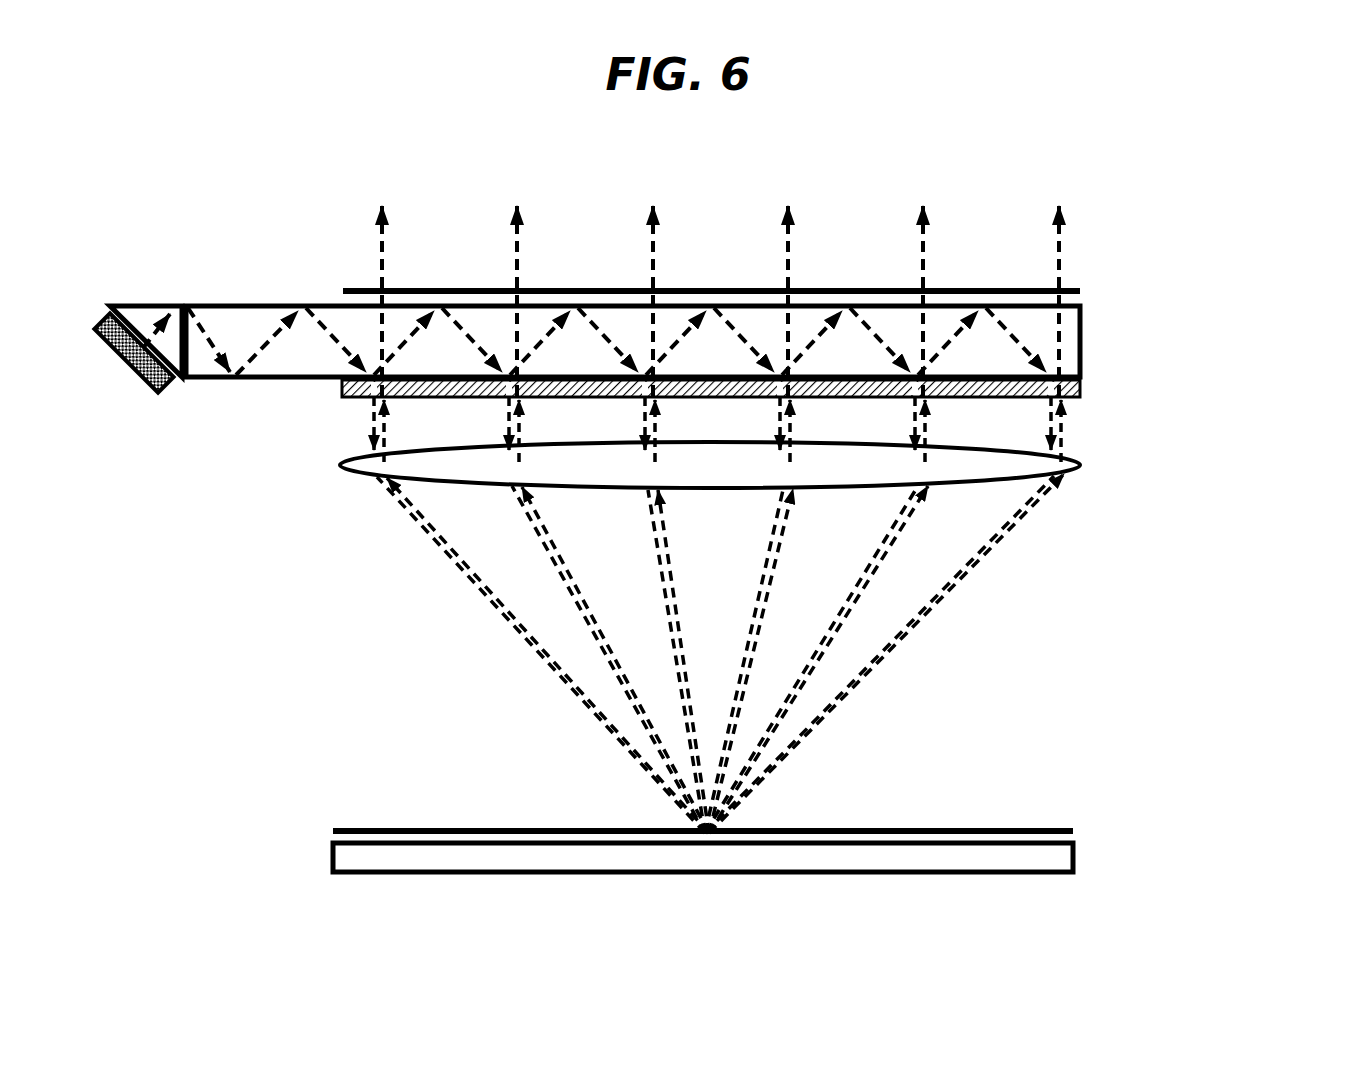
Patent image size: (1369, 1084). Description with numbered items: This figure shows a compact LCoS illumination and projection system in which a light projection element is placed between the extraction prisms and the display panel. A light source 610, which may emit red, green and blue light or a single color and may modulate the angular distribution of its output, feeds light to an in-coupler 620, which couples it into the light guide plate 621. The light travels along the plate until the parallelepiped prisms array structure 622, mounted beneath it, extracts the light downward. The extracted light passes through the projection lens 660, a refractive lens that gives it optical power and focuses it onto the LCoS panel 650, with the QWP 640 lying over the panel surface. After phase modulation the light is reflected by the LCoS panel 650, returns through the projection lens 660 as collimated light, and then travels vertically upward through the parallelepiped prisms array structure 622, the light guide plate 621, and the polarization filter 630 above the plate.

The light source 610 is at (143, 388).
The in-coupler 620 is at (128, 295).
The light guide plate 621 is at (277, 303).
The parallelepiped prisms array structure 622 is at (1090, 395).
The polarization filter 630 is at (1084, 278).
The QWP 640 is at (328, 833).
The LCoS panel 650 is at (785, 873).
The projection lens 660 is at (336, 474).